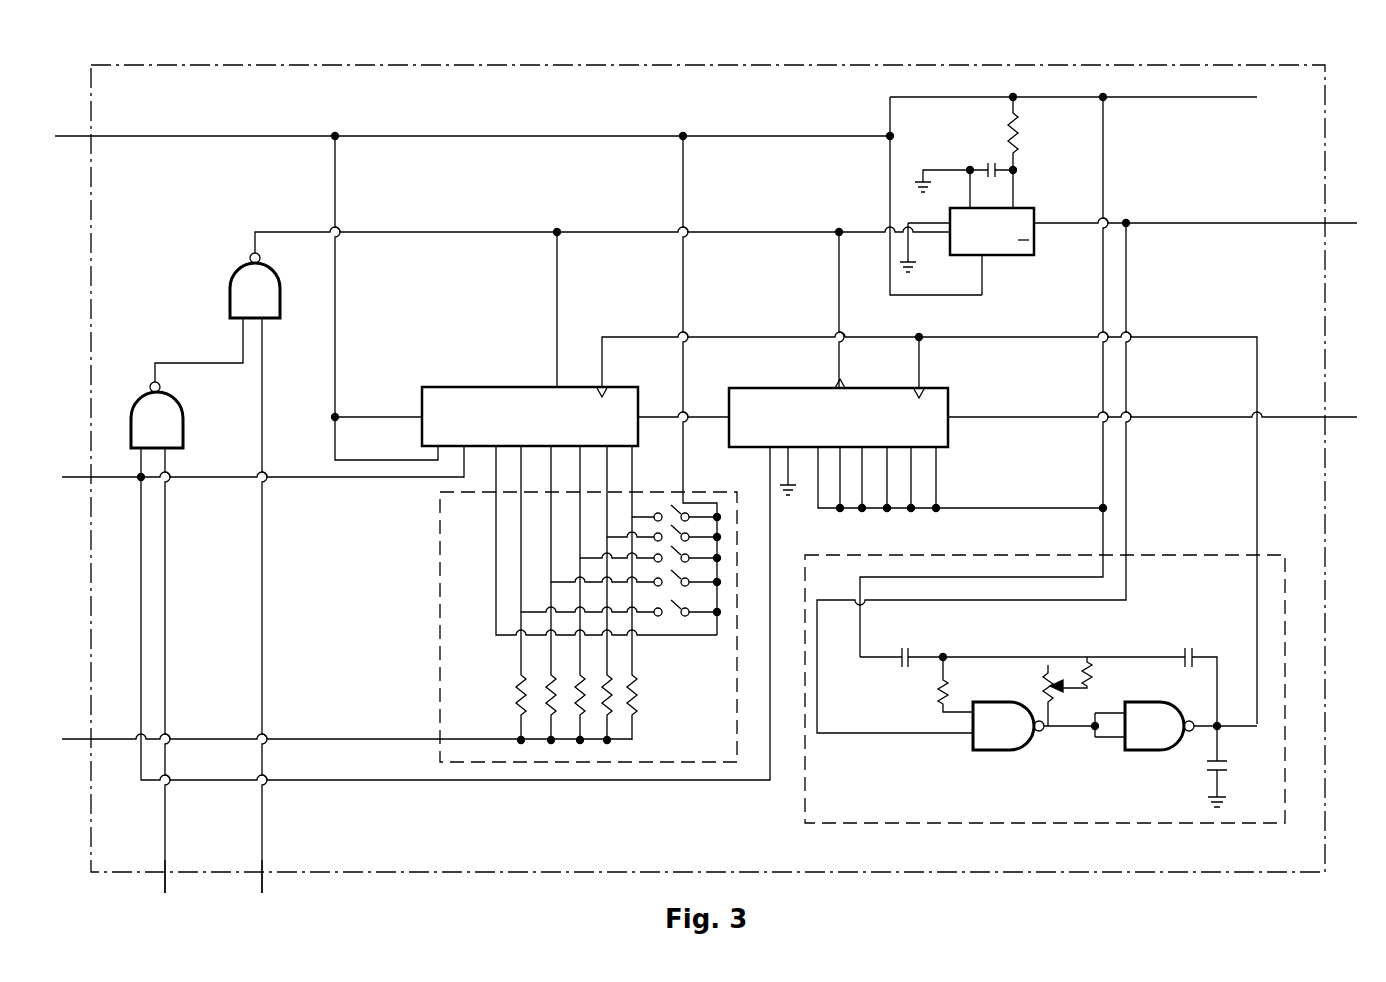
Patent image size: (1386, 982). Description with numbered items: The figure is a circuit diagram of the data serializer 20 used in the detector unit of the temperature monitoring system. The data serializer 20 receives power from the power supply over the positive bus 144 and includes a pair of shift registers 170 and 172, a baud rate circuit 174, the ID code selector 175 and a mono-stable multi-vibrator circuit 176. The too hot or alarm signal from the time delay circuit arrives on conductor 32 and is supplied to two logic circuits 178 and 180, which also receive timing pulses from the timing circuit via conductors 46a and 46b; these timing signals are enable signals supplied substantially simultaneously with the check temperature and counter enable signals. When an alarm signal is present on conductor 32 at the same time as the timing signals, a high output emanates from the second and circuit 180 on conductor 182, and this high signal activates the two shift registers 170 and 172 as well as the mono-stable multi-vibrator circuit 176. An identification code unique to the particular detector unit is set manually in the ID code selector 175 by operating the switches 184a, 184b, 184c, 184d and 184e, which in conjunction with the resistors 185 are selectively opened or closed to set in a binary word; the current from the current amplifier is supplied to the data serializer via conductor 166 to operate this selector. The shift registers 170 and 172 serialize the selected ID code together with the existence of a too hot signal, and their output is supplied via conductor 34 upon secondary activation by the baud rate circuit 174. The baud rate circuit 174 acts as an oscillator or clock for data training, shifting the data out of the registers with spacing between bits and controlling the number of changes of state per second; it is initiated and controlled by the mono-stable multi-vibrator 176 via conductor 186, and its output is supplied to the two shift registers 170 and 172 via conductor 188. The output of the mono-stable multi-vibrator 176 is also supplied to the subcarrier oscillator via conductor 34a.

The data serializer 20 is at (1108, 873).
The positive bus 144 is at (210, 137).
The conductor 182 is at (282, 232).
The second and circuit 180 is at (282, 302).
The logic circuit 178 is at (185, 422).
The conductor 32 is at (78, 477).
The conductor 166 is at (76, 740).
The conductor 46a is at (168, 876).
The conductor 46b is at (265, 876).
The shift register 170 is at (462, 387).
The shift register 172 is at (752, 388).
The conductor 34 is at (1336, 419).
The conductor 34a is at (1336, 223).
The mono-stable multi-vibrator circuit 176 is at (995, 257).
The conductor 186 is at (1126, 280).
The conductor 188 is at (1182, 337).
The ID code selector 175 is at (432, 630).
The switch 184a is at (621, 540).
The switch 184b is at (636, 528).
The switch 184c is at (650, 513).
The switch 184d is at (664, 501).
The switch 184e is at (676, 490).
The resistors 185 is at (636, 698).
The baud rate circuit 174 is at (805, 812).